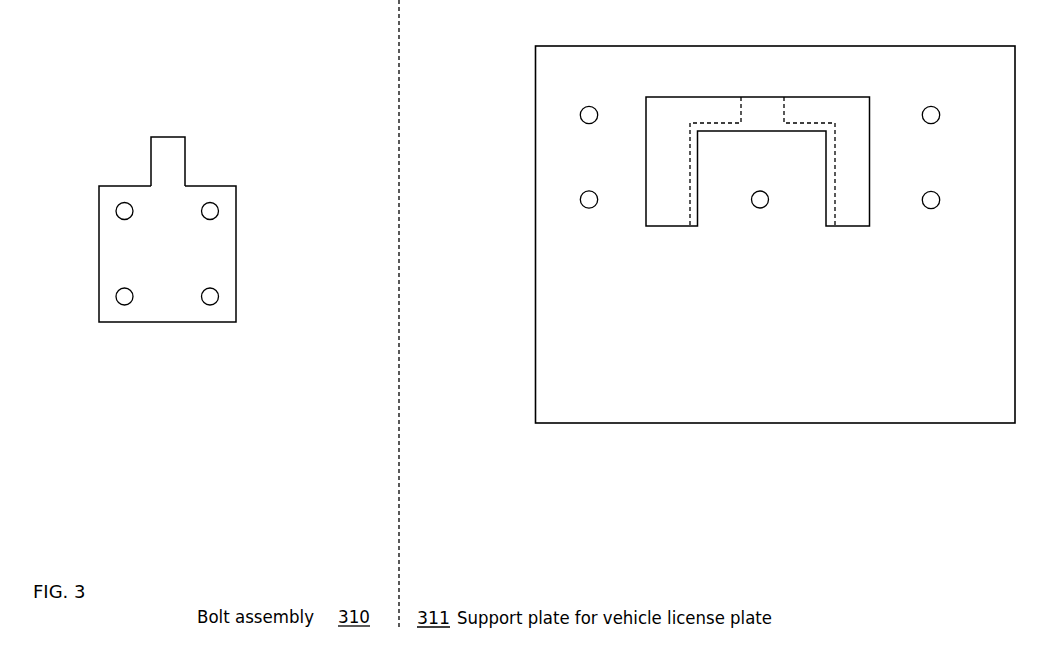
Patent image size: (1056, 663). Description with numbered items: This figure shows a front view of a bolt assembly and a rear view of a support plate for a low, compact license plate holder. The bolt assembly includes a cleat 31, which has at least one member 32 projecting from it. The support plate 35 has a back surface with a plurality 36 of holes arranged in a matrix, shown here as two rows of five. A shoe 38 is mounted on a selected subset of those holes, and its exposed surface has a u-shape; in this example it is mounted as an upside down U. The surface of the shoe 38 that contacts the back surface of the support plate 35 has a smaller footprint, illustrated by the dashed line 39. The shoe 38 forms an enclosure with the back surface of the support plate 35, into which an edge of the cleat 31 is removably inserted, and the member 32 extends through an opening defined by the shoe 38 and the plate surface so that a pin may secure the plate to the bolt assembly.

The cleat 31 is at (117, 186).
The member 32 is at (160, 143).
The support plate 35 is at (544, 45).
The plurality of holes 36 is at (571, 188).
The shoe 38 is at (682, 98).
The dashed line 39 is at (688, 178).